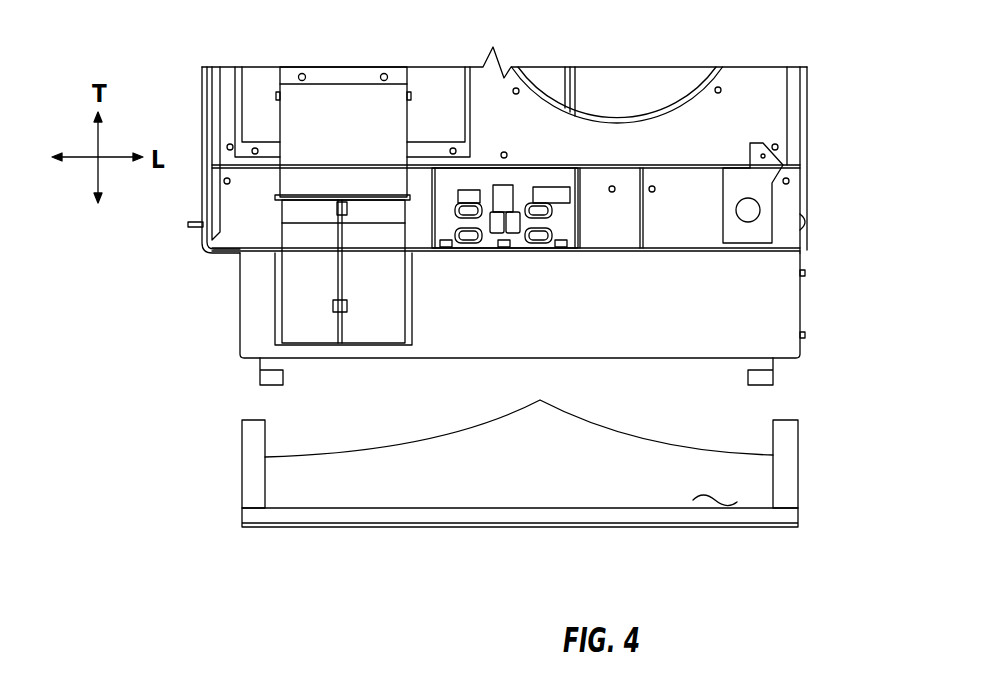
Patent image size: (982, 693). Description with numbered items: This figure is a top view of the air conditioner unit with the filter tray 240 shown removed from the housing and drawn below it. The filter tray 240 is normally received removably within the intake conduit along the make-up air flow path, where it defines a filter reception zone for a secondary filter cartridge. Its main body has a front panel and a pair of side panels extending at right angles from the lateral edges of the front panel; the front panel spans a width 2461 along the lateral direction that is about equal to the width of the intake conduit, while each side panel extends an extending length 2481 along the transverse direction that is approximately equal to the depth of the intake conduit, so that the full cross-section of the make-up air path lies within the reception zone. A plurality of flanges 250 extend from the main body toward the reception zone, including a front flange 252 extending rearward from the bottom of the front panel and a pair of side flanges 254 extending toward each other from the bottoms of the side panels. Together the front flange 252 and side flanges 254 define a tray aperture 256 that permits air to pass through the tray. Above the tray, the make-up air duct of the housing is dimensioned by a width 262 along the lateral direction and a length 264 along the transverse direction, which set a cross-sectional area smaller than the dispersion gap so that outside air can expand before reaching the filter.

The filter tray 240 is at (567, 432).
The plurality of flanges 250 is at (597, 380).
The front flange 252 is at (518, 508).
The side flange 254 is at (540, 400).
The tray aperture 256 is at (552, 446).
The width 262 is at (410, 438).
The length 264 is at (300, 341).
The width 2461 is at (798, 571).
The extending length 2481 is at (240, 526).